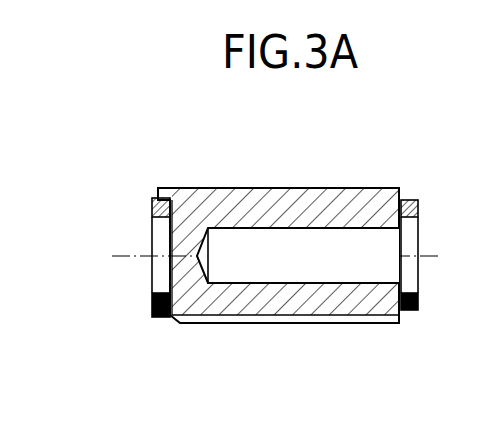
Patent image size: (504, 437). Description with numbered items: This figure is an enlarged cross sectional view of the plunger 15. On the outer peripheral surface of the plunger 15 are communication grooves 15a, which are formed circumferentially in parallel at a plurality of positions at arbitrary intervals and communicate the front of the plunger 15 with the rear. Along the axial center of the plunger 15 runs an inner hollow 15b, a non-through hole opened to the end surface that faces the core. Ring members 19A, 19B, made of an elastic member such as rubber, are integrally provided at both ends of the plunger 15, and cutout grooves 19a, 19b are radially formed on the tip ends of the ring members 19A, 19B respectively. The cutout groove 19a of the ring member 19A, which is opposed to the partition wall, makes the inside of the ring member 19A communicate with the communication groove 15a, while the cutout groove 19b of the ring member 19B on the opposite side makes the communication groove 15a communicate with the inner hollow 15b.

The plunger 15 is at (253, 182).
The communication grooves 15a is at (283, 313).
The inner hollow 15b is at (317, 268).
The ring member 19A is at (152, 201).
The cutout groove 19a is at (152, 308).
The ring member 19B is at (410, 200).
The cutout groove 19b is at (420, 302).